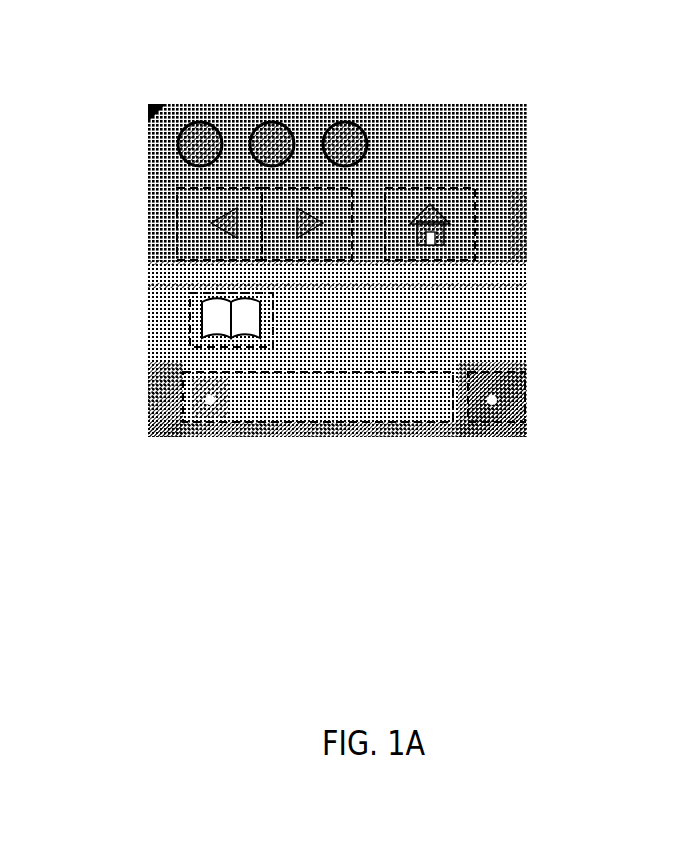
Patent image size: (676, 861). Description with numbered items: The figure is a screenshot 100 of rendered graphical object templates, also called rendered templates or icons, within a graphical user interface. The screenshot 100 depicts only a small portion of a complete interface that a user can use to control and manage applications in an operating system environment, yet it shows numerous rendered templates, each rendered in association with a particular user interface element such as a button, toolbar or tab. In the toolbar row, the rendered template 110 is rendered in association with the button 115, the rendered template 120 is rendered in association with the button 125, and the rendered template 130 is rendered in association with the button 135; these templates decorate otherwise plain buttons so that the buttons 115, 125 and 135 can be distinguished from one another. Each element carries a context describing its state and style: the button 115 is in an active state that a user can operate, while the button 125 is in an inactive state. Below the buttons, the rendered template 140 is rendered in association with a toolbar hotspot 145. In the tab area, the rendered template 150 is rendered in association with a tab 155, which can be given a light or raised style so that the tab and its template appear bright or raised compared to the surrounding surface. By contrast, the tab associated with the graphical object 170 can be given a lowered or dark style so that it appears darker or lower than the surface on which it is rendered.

The screenshot 100 is at (149, 105).
The rendered graphical object template 110 is at (212, 223).
The button 115 is at (177, 192).
The rendered graphical object template 120 is at (310, 222).
The button 125 is at (340, 188).
The rendered graphical object template 130 is at (445, 222).
The button 135 is at (475, 253).
The rendered graphical object template 140 is at (192, 320).
The toolbar hotspot 145 is at (190, 312).
The rendered graphical object template 150 is at (209, 402).
The tab 155 is at (183, 413).
The graphical object 170 is at (490, 405).